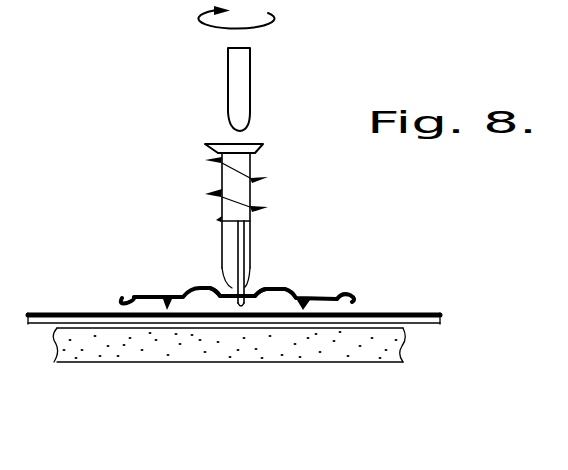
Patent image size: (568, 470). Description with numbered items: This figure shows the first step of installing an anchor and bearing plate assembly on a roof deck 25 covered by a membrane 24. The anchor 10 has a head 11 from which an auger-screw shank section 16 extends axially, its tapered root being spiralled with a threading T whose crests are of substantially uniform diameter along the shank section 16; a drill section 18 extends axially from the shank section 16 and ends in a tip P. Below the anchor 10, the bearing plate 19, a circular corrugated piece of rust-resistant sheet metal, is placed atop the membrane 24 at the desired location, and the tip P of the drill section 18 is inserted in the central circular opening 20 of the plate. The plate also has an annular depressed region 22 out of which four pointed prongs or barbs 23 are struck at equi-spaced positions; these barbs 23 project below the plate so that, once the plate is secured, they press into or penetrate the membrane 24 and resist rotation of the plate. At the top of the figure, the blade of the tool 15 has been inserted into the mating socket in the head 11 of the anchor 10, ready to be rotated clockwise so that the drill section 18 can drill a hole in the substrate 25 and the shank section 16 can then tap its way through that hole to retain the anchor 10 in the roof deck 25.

The anchor 10 is at (286, 190).
The head 11 is at (262, 143).
The tool 15 is at (243, 58).
The shank section 16 is at (220, 200).
The drill section 18 is at (253, 238).
The bearing plate 19 is at (145, 290).
The central circular opening 20 is at (258, 282).
The annular depressed region 22 is at (220, 288).
The pointed prongs or barbs 23 is at (339, 292).
The membrane 24 is at (440, 317).
The roof deck 25 is at (362, 352).
The threading T is at (222, 162).
The tip P is at (240, 308).